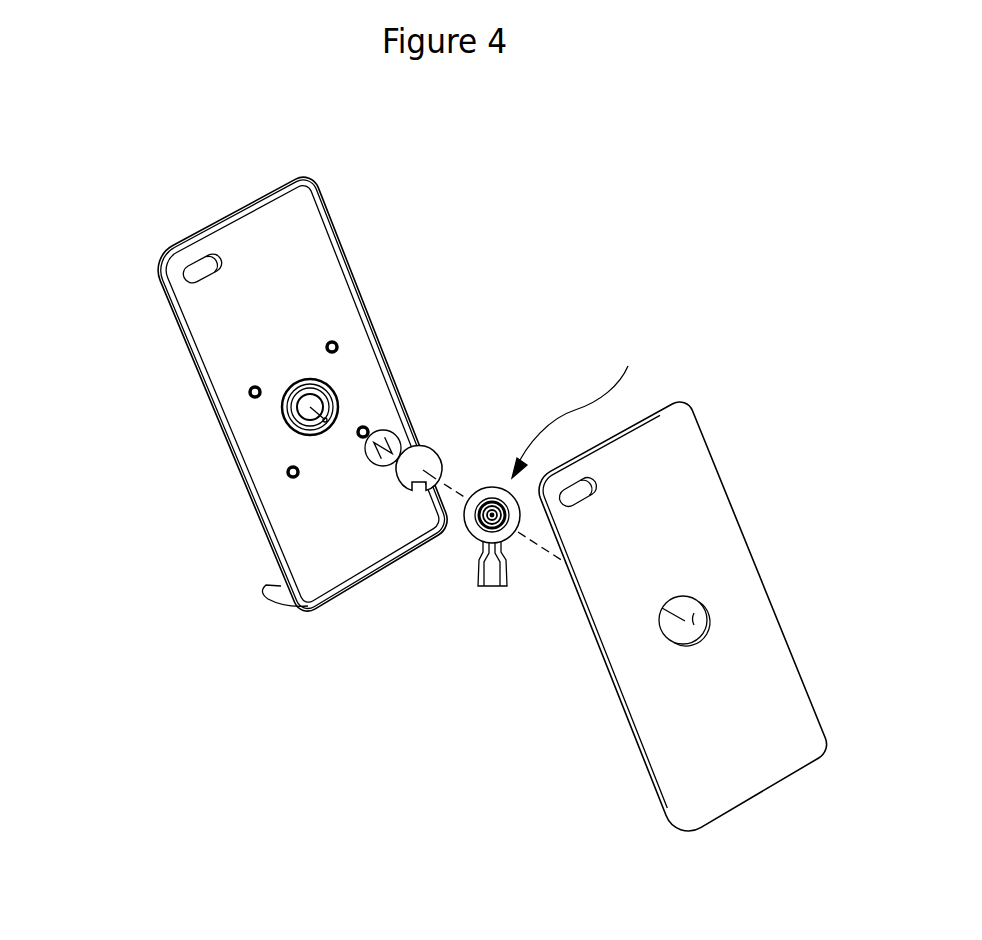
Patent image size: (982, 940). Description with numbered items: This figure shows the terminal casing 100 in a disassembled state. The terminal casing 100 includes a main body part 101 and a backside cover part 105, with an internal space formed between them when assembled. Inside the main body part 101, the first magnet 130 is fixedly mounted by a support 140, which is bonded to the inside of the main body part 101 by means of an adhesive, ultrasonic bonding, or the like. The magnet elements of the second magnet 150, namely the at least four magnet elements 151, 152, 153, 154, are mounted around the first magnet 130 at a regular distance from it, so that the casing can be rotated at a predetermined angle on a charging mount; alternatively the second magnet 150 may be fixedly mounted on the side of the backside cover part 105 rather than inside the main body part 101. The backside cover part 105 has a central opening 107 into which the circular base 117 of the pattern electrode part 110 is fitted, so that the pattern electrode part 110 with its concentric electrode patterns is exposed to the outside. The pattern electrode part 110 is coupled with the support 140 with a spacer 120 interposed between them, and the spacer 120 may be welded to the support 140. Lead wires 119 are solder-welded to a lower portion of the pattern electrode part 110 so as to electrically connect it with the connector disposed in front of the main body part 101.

The terminal casing 100 is at (550, 143).
The main body part 101 is at (353, 289).
The backside cover part 105 is at (688, 522).
The central opening 107 is at (707, 621).
The pattern electrode part 110 is at (582, 404).
The circular base 117 is at (474, 529).
The lead wires 119 is at (371, 601).
The spacer 120 is at (407, 474).
The first magnet 130 is at (397, 437).
The support 140 is at (336, 392).
The second magnet 150 is at (207, 461).
The magnet element 151 is at (326, 350).
The magnet element 152 is at (250, 396).
The magnet element 153 is at (288, 476).
The magnet element 154 is at (358, 433).